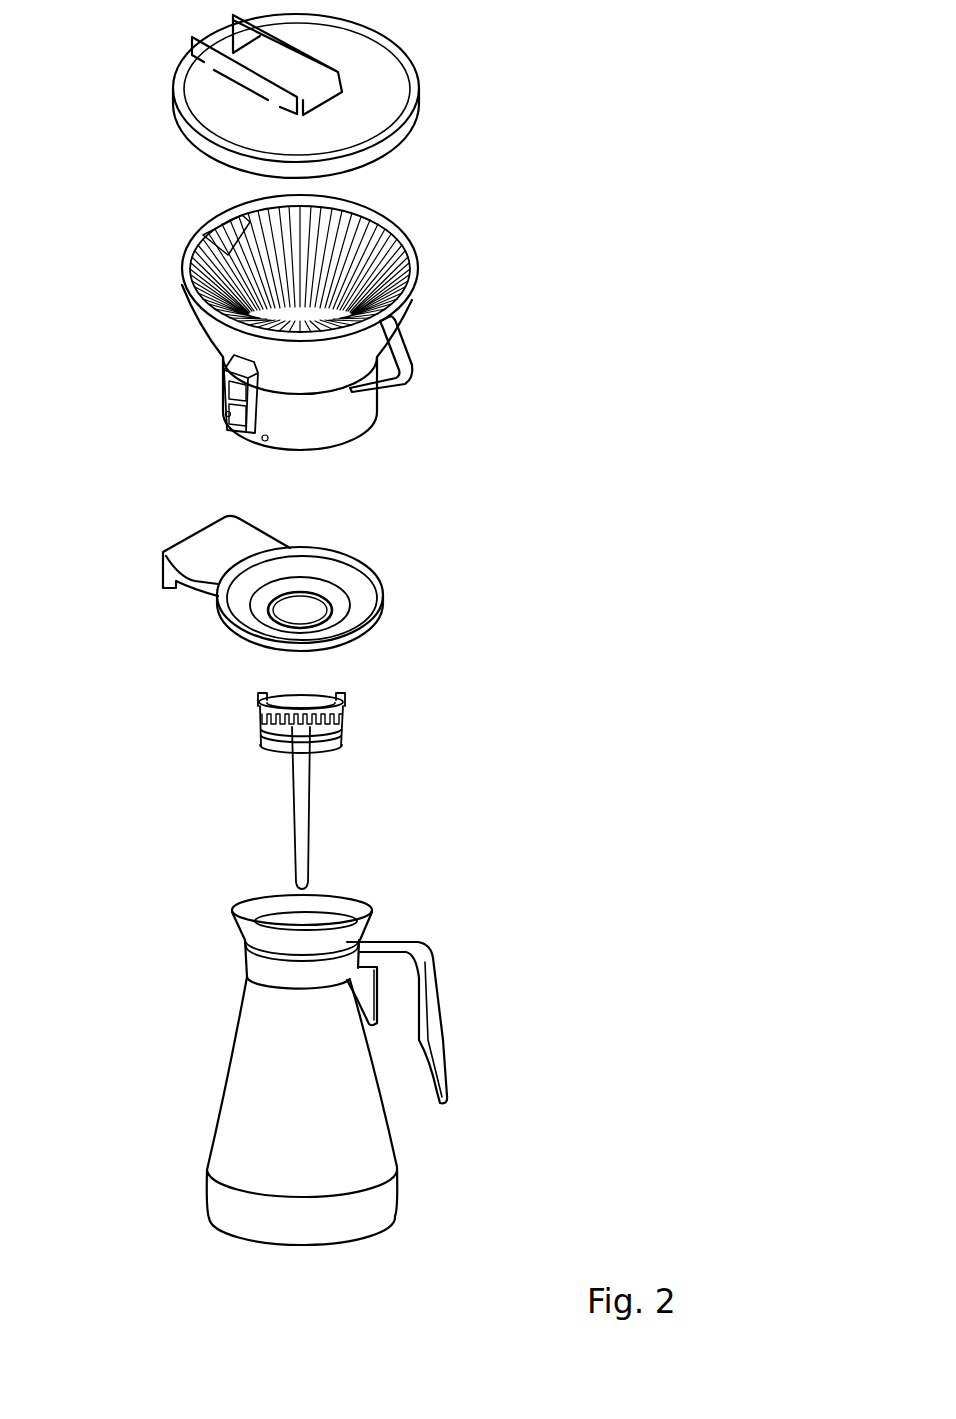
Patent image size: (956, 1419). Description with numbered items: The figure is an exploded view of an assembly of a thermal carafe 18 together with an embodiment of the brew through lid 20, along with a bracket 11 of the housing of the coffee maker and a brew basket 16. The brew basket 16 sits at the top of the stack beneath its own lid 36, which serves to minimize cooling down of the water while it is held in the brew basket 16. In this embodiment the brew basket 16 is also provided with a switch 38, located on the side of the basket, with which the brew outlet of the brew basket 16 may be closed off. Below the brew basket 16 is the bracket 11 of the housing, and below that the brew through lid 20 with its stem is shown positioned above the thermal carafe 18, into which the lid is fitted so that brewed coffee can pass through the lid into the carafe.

The lid 36 is at (380, 95).
The brew basket 16 is at (398, 352).
The switch 38 is at (242, 389).
The bracket 11 is at (383, 608).
The brew through lid 20 is at (345, 723).
The thermal carafe 18 is at (363, 1128).